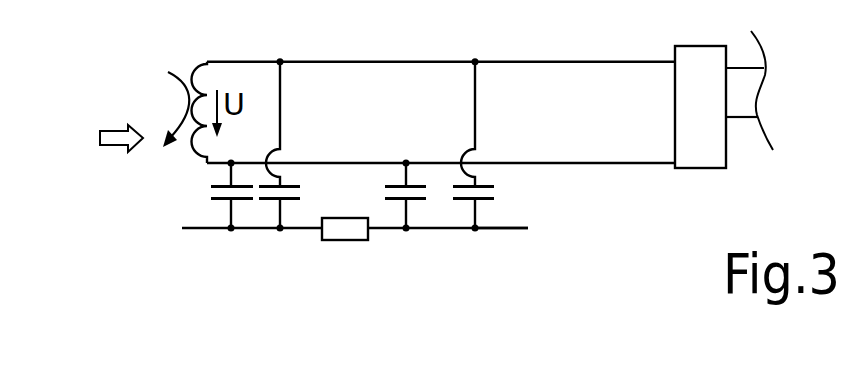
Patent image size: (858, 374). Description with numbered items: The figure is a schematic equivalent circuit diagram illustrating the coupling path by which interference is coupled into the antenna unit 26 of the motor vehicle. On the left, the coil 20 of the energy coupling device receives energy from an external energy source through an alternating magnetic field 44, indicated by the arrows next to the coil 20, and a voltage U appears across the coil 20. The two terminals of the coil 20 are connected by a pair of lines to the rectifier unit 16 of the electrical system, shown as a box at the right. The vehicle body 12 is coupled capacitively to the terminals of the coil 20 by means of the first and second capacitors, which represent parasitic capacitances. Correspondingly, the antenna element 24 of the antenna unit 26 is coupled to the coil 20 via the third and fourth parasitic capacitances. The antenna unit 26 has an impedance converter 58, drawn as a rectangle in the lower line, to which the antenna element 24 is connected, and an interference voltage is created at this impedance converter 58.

The vehicle body 12 is at (257, 229).
The rectifier unit 16 is at (705, 169).
The coil 20 is at (203, 92).
The antenna element 24 is at (515, 229).
The antenna unit 26 is at (422, 262).
The alternating magnetic field 44 is at (180, 78).
The impedance converter 58 is at (345, 241).